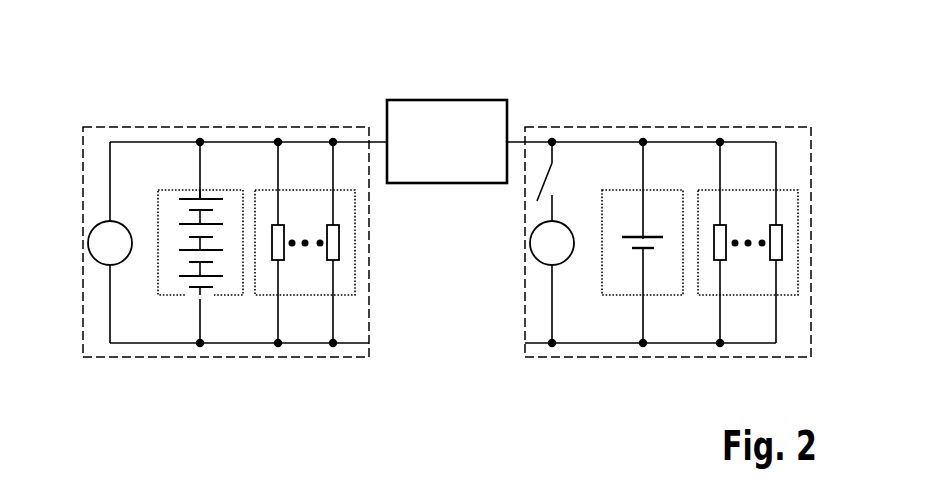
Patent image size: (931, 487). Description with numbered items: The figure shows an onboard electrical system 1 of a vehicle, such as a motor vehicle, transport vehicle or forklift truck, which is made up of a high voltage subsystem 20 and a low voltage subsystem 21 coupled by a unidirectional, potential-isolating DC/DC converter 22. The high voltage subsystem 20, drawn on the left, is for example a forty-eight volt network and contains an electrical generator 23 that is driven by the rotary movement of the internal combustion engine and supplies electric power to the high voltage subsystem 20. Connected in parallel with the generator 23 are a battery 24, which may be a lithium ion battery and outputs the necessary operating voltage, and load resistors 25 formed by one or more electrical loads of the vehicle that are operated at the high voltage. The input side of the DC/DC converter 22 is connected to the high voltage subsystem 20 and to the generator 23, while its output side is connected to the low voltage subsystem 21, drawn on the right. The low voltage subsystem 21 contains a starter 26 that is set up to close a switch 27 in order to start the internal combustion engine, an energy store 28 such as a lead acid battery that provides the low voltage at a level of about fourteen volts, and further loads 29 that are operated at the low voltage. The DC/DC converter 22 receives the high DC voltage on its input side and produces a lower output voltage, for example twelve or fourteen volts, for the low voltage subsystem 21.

The onboard electrical system 1 is at (780, 92).
The high voltage subsystem 20 is at (224, 127).
The low voltage subsystem 21 is at (667, 127).
The DC/DC converter 22 is at (445, 100).
The electrical generator 23 is at (89, 251).
The battery 24 is at (175, 296).
The load resistors 25 is at (267, 296).
The starter 26 is at (531, 251).
The switch 27 is at (545, 182).
The energy store 28 is at (617, 296).
The loads 29 is at (709, 296).